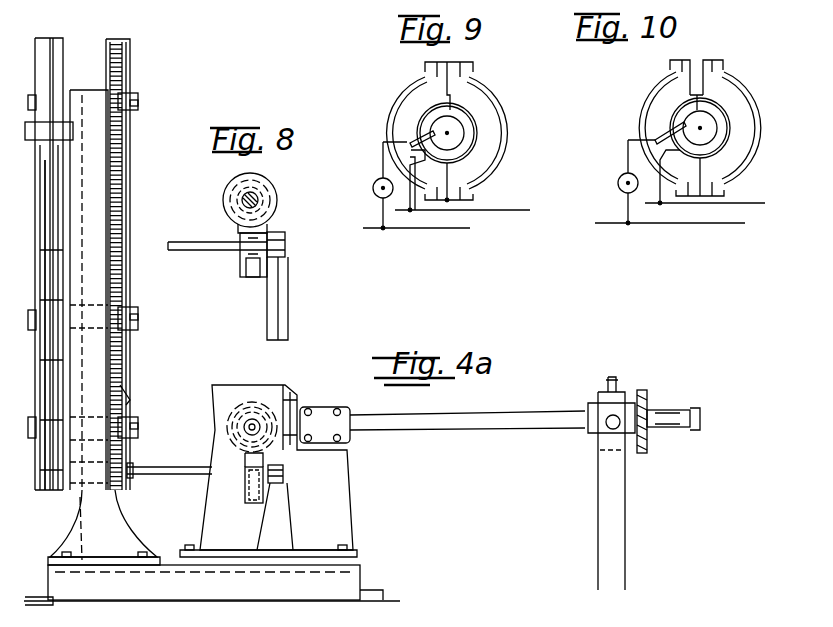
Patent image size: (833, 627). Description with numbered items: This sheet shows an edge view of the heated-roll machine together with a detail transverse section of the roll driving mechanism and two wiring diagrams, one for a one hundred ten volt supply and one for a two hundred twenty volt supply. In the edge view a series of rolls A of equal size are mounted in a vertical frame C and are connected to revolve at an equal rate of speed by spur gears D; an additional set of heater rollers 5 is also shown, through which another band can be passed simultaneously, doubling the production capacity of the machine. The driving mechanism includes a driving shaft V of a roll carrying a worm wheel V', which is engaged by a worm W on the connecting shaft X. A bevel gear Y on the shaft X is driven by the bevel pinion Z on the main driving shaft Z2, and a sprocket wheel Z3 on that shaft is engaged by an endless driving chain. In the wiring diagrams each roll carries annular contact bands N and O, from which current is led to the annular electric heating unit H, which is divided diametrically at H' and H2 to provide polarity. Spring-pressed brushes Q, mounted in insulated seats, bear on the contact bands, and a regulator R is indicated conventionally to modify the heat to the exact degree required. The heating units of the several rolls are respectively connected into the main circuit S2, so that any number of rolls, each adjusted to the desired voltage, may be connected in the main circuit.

In FIG. 4A, the roll A is at (60, 70).
In FIG. 4A, the additional heater roller 5 is at (73, 325).
In FIG. 4A, the vertical frame C is at (118, 165).
In FIG. 4A, the spur gear D is at (120, 393).
In FIG. 4A, the driving shaft V is at (169, 462).
In FIG. 8, the driving shaft V is at (217, 256).
In FIG. 4A, the worm wheel V' is at (250, 486).
In FIG. 8, the worm wheel V' is at (260, 298).
In FIG. 4A, the worm W is at (290, 412).
In FIG. 8, the worm W is at (312, 208).
In FIG. 4A, the connecting shaft X is at (254, 425).
In FIG. 8, the connecting shaft X is at (314, 205).
In FIG. 4A, the bevel gear Y is at (275, 400).
In FIG. 4A, the bevel pinion Z is at (315, 412).
In FIG. 4A, the main driving shaft Z2 is at (390, 422).
In FIG. 4A, the sprocket wheel Z3 is at (648, 395).
In FIG. 9, the heating unit H is at (443, 131).
In FIG. 10, the heating unit H is at (700, 128).
In FIG. 9, the heating unit division H2 is at (455, 80).
In FIG. 10, the heating unit division H2 is at (697, 70).
In FIG. 9, the heating unit section H' is at (463, 182).
In FIG. 10, the heating unit section H' is at (715, 177).
In FIG. 9, the annular contact band N is at (464, 133).
In FIG. 10, the annular contact band N is at (717, 125).
In FIG. 9, the annular contact band O is at (472, 145).
In FIG. 10, the annular contact band O is at (716, 141).
In FIG. 9, the brush Q is at (410, 143).
In FIG. 10, the brush Q is at (660, 137).
In FIG. 9, the regulator R is at (373, 193).
In FIG. 10, the regulator R is at (616, 188).
In FIG. 9, the main circuit S2 is at (470, 228).
In FIG. 10, the main circuit S2 is at (740, 228).